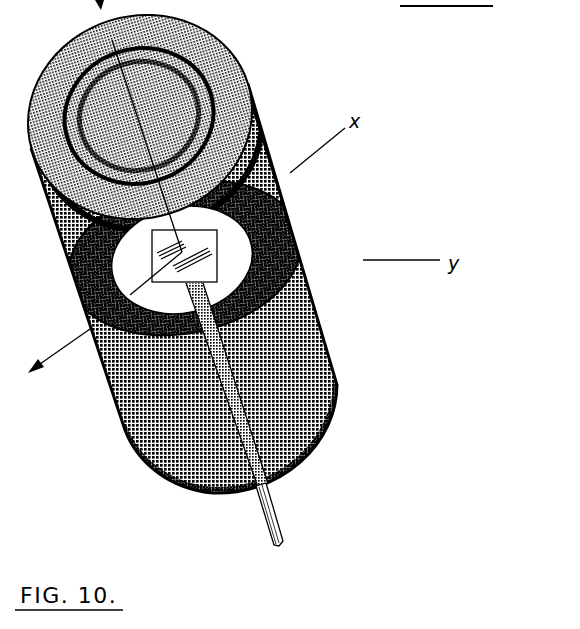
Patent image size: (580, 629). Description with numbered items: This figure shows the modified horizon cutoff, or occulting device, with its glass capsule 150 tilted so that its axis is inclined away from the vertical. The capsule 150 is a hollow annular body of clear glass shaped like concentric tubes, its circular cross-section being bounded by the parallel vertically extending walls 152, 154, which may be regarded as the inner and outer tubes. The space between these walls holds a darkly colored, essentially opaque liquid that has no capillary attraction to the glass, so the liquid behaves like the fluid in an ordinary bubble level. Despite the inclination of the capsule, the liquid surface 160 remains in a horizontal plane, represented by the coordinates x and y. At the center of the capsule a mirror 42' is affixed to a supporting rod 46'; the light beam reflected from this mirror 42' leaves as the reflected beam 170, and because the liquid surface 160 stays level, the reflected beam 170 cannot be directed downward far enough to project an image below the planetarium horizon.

The capsule 150 is at (262, 98).
The vertically extending wall 152 is at (48, 206).
The vertically extending wall 154 is at (80, 92).
The liquid surface 160 is at (274, 293).
The mirror 42' is at (226, 244).
The supporting rod 46' is at (249, 414).
The reflected beam 170 is at (73, 334).